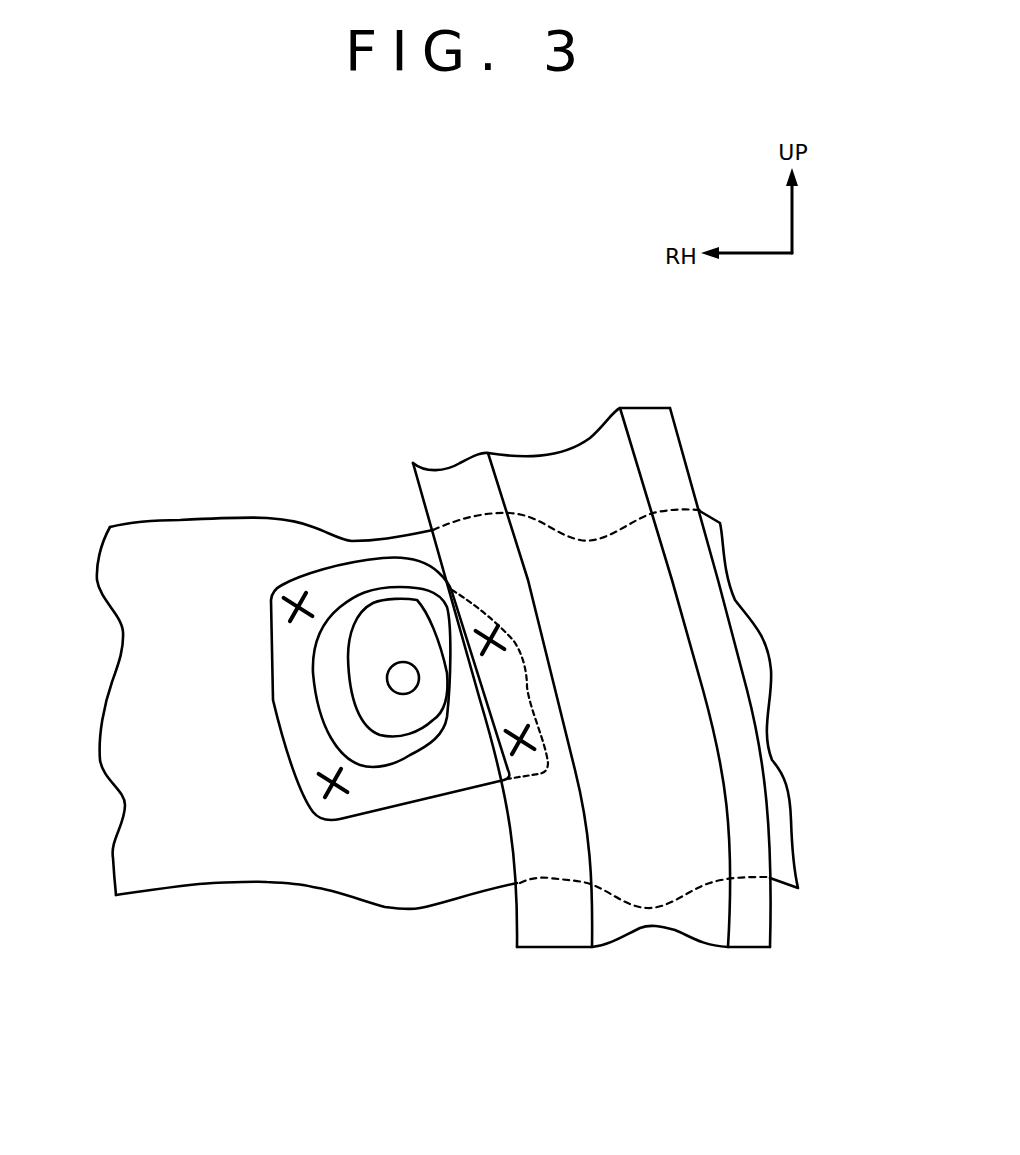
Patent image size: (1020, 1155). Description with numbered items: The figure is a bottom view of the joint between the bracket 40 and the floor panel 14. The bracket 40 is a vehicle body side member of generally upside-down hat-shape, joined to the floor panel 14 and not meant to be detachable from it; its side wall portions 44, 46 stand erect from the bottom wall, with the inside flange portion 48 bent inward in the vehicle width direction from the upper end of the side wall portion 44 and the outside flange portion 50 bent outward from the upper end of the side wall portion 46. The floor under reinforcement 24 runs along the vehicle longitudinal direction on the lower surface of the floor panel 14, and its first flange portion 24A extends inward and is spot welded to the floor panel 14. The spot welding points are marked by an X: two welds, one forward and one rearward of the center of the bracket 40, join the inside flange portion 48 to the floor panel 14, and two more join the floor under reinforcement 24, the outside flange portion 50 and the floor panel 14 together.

The floor panel 14 is at (200, 546).
The floor under reinforcement 24 is at (551, 470).
The first flange portion 24A is at (458, 486).
The bracket 40 is at (413, 790).
The side wall portion 44 is at (327, 668).
The side wall portion 46 is at (433, 613).
The inside flange portion 48 is at (295, 697).
The outside flange portion 50 is at (517, 683).